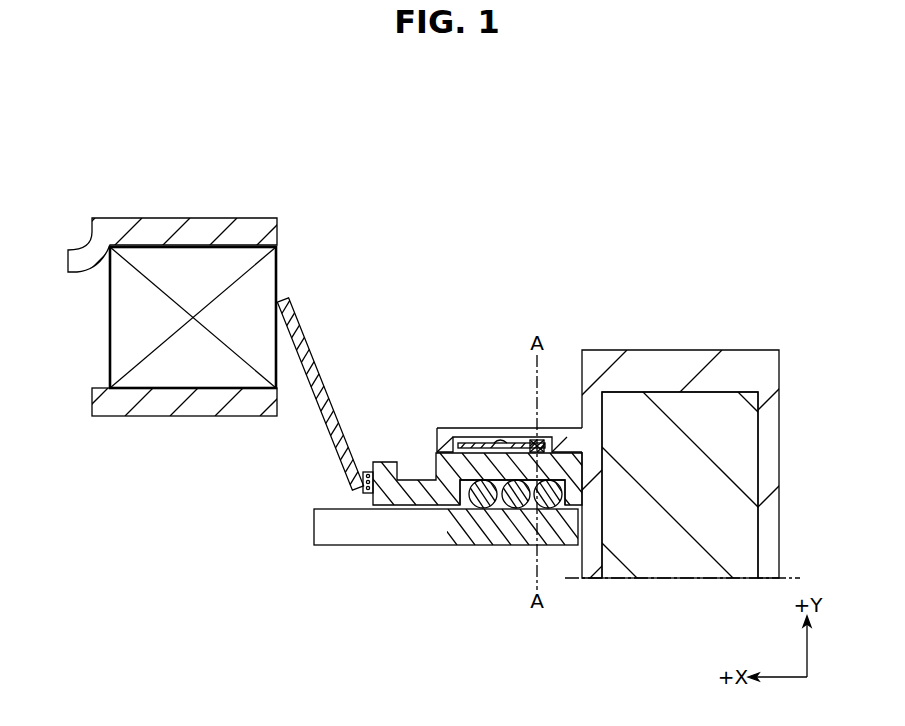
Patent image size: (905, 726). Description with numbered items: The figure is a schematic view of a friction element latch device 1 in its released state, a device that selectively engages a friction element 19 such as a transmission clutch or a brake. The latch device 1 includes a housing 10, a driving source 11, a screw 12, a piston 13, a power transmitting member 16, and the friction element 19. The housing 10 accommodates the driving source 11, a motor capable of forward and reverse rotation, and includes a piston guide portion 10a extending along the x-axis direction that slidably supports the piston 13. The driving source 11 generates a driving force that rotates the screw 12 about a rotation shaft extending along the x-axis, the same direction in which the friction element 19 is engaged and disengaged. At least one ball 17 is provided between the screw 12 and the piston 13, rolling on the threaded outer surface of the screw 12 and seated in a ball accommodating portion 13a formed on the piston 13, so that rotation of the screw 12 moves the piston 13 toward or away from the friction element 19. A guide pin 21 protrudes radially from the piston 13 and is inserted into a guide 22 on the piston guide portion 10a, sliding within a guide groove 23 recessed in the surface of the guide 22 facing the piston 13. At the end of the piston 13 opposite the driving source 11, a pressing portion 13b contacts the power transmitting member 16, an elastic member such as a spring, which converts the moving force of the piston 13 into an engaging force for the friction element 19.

The friction element latch device 1 is at (511, 117).
The housing 10 is at (770, 425).
The piston guide portion 10a is at (463, 431).
The driving source 11 is at (750, 447).
The screw 12 is at (386, 530).
The piston 13 is at (418, 487).
The ball accommodating portion 13a is at (478, 506).
The pressing portion 13b is at (367, 471).
The power transmitting member 16 is at (303, 333).
The ball 17 is at (508, 511).
The friction element 19 is at (252, 206).
The guide pin 21 is at (533, 441).
The guide 22 is at (487, 441).
The guide groove 23 is at (505, 440).